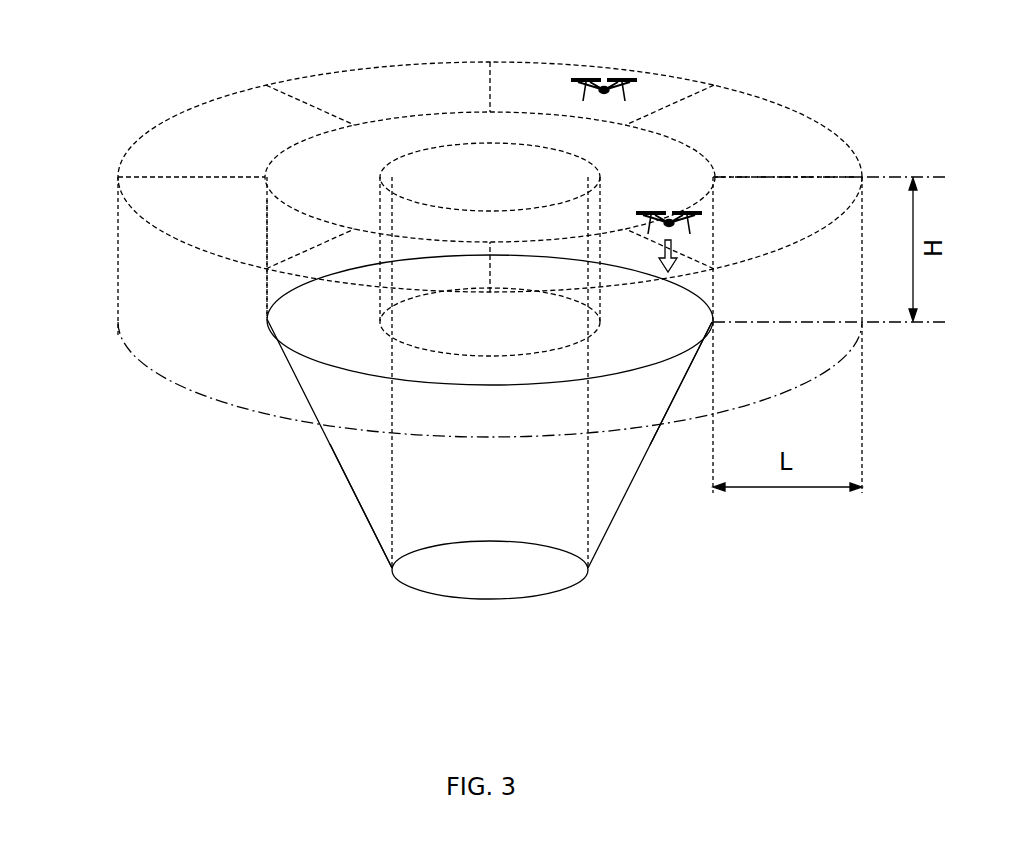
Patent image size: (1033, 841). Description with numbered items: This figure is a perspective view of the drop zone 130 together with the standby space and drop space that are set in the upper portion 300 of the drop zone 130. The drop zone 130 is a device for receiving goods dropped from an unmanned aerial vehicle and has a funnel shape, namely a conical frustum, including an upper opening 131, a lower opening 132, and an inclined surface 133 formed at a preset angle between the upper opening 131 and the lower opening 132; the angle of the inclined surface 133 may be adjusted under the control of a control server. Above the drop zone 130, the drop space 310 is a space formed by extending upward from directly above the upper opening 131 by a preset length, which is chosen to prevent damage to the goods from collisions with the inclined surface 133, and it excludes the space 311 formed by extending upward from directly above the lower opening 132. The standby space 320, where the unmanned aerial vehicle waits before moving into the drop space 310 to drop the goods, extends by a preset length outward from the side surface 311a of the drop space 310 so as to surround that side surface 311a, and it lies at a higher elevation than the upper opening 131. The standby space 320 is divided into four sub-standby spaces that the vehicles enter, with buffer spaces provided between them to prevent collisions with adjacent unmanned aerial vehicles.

The upper portion 300 is at (125, 120).
The drop space 310 is at (493, 123).
The space 311 is at (467, 172).
The side surface 311a is at (267, 292).
The standby space 320 is at (718, 108).
The drop zone 130 is at (338, 489).
The upper opening 131 is at (620, 366).
The lower opening 132 is at (420, 590).
The inclined surface 133 is at (372, 530).